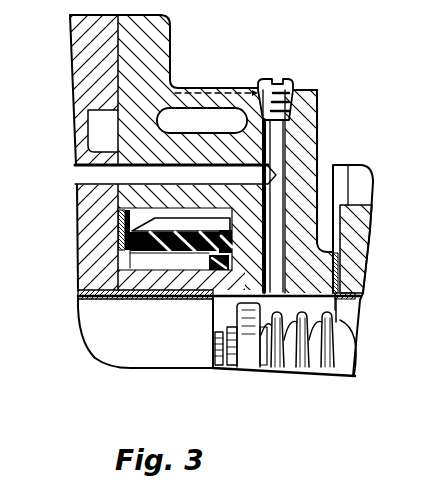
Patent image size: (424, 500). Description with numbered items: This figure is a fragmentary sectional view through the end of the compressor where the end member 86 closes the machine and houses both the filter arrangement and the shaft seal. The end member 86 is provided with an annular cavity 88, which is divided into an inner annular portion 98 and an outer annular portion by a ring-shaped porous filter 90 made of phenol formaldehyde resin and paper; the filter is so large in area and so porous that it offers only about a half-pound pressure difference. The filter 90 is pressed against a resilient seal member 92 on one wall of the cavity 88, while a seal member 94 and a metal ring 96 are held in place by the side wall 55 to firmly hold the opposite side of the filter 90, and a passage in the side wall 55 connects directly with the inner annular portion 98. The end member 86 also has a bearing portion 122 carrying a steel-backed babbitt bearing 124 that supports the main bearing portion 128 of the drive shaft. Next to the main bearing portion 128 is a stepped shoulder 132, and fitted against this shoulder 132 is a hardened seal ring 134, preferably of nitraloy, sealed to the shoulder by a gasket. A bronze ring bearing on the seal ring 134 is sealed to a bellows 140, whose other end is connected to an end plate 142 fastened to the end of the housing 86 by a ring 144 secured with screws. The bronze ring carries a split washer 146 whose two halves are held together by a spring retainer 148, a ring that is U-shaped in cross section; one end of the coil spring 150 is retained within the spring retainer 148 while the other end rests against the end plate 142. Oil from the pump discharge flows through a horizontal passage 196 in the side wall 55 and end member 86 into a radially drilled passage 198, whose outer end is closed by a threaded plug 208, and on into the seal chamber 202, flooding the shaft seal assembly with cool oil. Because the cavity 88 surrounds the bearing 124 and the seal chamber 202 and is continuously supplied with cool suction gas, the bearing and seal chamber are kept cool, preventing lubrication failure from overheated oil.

The side wall 55 is at (82, 89).
The end member 86 is at (163, 63).
The annular cavity 88 is at (203, 118).
The horizontal passage 196 is at (80, 180).
The threaded plug 208 is at (280, 79).
The radially drilled passage 198 is at (280, 146).
The metal ring 96 is at (106, 244).
The inner annular portion 98 is at (145, 262).
The ring-shaped porous filter 90 is at (172, 253).
The resilient seal member 92 is at (222, 250).
The seal member 94 is at (125, 262).
The bearing portion 122 is at (200, 266).
The steel-backed babbitt bearing 124 is at (78, 294).
The end plate 142 is at (362, 296).
The ring 144 is at (358, 250).
The bellows 140 is at (350, 360).
The seal chamber 202 is at (330, 310).
The main bearing portion 128 is at (135, 368).
The stepped shoulder 132 is at (212, 370).
The hardened seal ring 134 is at (218, 368).
The split washer 146 is at (244, 362).
The spring retainer 148 is at (255, 365).
The coil spring 150 is at (352, 368).